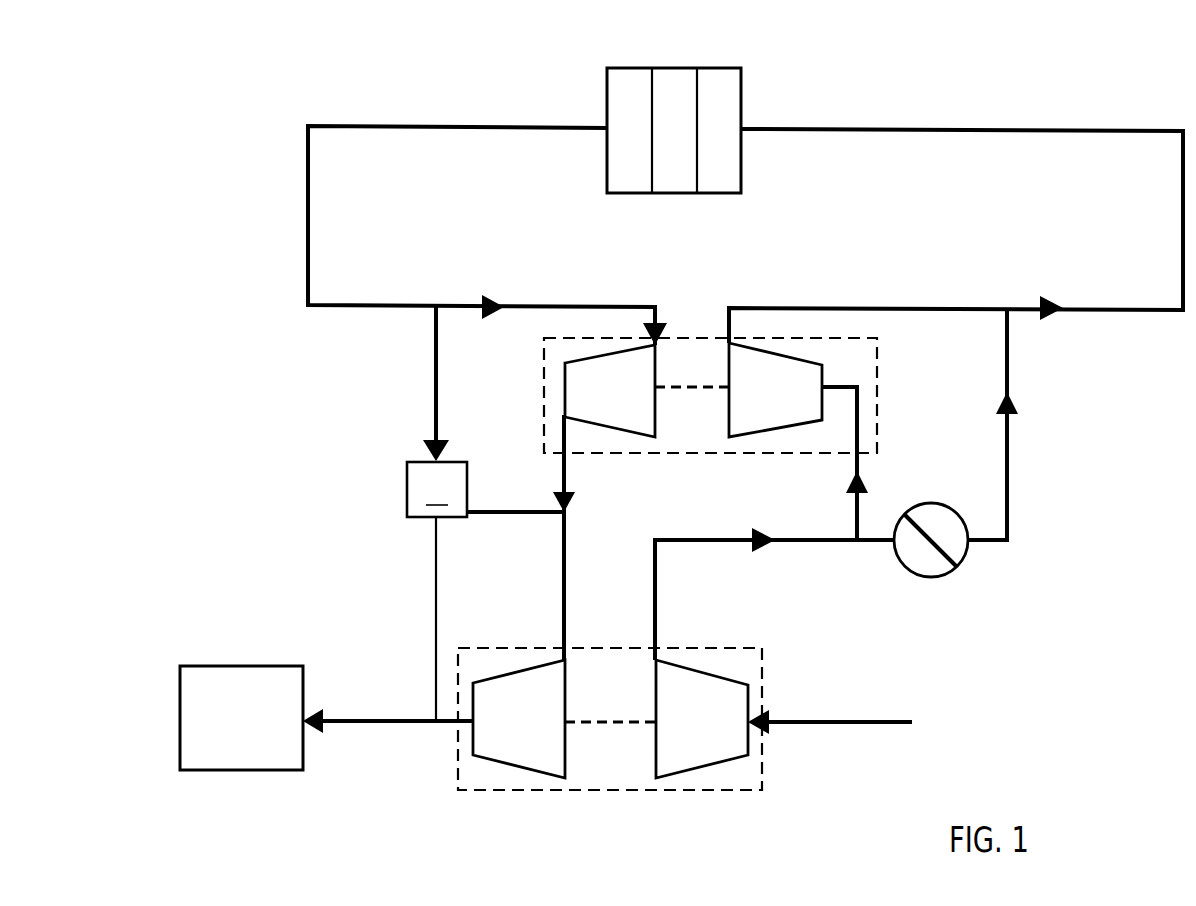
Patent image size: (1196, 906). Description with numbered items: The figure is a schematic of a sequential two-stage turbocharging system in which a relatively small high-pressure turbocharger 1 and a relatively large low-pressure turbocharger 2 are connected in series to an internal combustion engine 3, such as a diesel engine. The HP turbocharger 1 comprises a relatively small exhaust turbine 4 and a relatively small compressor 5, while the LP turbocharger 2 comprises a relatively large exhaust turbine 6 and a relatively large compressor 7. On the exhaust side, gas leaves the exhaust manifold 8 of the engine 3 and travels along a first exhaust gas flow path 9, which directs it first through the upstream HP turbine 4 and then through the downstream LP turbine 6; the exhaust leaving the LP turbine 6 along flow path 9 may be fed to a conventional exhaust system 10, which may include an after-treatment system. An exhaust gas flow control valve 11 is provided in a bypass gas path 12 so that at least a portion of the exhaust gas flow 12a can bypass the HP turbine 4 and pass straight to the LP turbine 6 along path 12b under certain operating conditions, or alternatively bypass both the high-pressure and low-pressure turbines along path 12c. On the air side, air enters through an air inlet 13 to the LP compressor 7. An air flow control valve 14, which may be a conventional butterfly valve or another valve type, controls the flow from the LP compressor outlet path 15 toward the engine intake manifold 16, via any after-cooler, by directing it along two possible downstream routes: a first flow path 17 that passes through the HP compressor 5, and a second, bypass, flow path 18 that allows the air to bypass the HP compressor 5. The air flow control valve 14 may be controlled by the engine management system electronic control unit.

The high-pressure turbocharger 1 is at (877, 402).
The low-pressure turbocharger 2 is at (762, 748).
The internal combustion engine 3 is at (682, 78).
The exhaust turbine 4 is at (612, 430).
The compressor 5 is at (786, 430).
The exhaust turbine 6 is at (527, 768).
The compressor 7 is at (690, 768).
The exhaust manifold 8 is at (614, 97).
The first exhaust gas flow path 9 is at (543, 306).
The exhaust system 10 is at (277, 760).
The exhaust gas flow control valve 11 is at (437, 489).
The bypass gas path 12 is at (449, 514).
The exhaust gas flow 12a is at (436, 362).
The path 12b is at (497, 508).
The path 12c is at (436, 607).
The air inlet 13 is at (828, 724).
The air flow control valve 14 is at (906, 578).
The LP compressor outlet path 15 is at (656, 627).
The engine intake manifold 16 is at (732, 113).
The first flow path 17 is at (857, 516).
The second bypass flow path 18 is at (1007, 506).